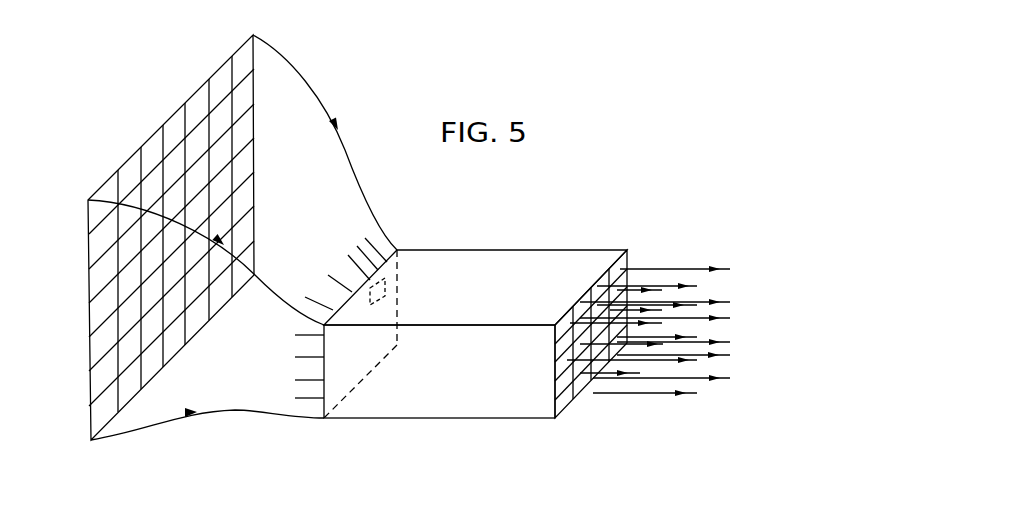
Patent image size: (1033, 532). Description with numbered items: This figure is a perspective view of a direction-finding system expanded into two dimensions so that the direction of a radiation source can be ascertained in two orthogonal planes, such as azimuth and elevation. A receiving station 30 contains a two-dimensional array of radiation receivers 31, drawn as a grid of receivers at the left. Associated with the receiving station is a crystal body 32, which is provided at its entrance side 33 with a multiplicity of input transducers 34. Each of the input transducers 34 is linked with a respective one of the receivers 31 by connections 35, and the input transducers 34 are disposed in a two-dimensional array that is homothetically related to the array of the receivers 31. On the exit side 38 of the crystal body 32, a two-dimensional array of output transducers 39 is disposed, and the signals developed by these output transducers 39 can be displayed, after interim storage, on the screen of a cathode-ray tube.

The receiving station 30 is at (143, 153).
The radiation receivers 31 is at (218, 76).
The crystal body 32 is at (403, 424).
The entrance side 33 is at (397, 250).
The input transducers 34 is at (400, 273).
The connections 35 is at (357, 262).
The exit side 38 is at (628, 262).
The output transducers 39 is at (568, 364).